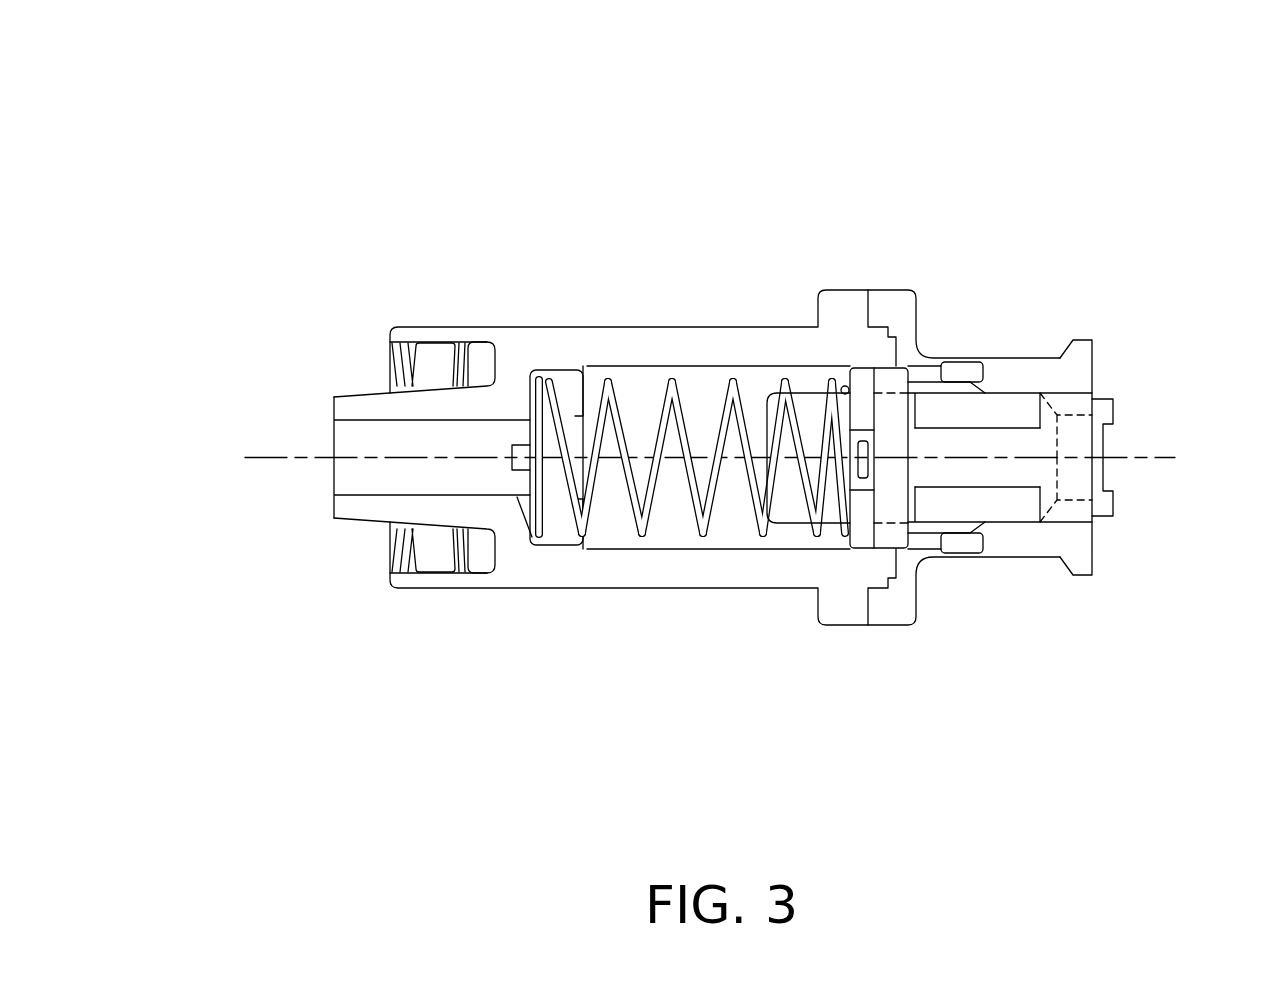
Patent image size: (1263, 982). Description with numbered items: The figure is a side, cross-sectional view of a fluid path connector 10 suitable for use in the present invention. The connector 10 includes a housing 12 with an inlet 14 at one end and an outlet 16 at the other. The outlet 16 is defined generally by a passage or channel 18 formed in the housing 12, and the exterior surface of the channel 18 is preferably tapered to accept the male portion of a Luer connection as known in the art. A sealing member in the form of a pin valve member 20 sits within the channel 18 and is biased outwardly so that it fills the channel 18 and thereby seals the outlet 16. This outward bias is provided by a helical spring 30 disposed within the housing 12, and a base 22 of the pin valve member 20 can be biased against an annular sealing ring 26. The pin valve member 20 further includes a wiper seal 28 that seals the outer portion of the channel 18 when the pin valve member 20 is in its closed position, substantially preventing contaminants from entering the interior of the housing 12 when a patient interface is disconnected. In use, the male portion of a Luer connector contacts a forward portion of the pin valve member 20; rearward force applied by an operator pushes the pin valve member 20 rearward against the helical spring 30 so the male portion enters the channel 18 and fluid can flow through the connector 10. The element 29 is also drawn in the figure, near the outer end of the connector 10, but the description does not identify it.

The connector 10 is at (620, 182).
The housing 12 is at (487, 592).
The inlet 14 is at (333, 439).
The outlet 16 is at (1097, 393).
The channel 18 is at (1011, 527).
The pin valve member 20 is at (972, 466).
The base 22 is at (893, 370).
The annular sealing ring 26 is at (912, 380).
The wiper seal 28 is at (1090, 527).
The adjustment screw head 29 is at (1117, 513).
The helical spring 30 is at (700, 547).